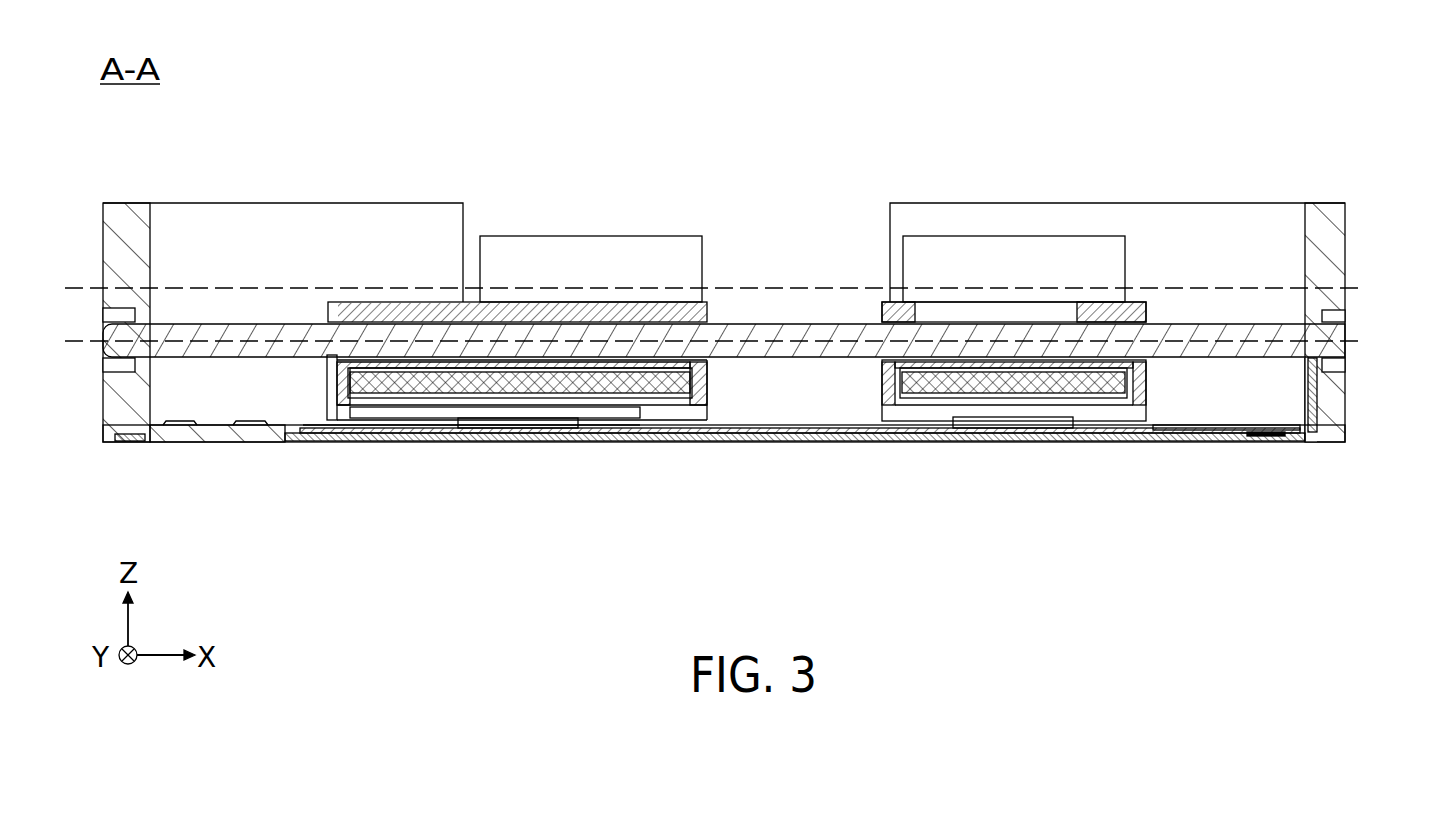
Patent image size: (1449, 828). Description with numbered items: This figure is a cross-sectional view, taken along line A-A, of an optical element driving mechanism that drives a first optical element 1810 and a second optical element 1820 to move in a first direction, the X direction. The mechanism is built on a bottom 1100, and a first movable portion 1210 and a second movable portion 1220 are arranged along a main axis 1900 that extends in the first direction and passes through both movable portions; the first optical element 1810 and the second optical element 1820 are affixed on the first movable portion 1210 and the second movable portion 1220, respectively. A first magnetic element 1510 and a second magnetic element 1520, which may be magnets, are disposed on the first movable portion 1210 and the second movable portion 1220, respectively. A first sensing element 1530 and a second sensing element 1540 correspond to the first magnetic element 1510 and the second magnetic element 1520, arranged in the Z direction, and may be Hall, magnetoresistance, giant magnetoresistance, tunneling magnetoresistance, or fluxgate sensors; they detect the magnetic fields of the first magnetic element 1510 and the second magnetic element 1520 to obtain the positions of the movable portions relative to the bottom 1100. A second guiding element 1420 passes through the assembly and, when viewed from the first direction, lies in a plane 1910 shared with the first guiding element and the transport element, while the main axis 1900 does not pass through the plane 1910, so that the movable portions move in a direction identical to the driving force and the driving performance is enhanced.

The bottom 1100 is at (1322, 212).
The first movable portion 1210 is at (1147, 378).
The second movable portion 1220 is at (703, 378).
The second guiding element 1420 is at (825, 350).
The first magnetic element 1510 is at (1097, 392).
The second magnetic element 1520 is at (422, 388).
The first sensing element 1530 is at (1007, 428).
The second sensing element 1540 is at (513, 428).
The first optical element 1810 is at (1013, 250).
The second optical element 1820 is at (590, 250).
The main axis 1900 is at (1360, 288).
The plane 1910 is at (1360, 341).